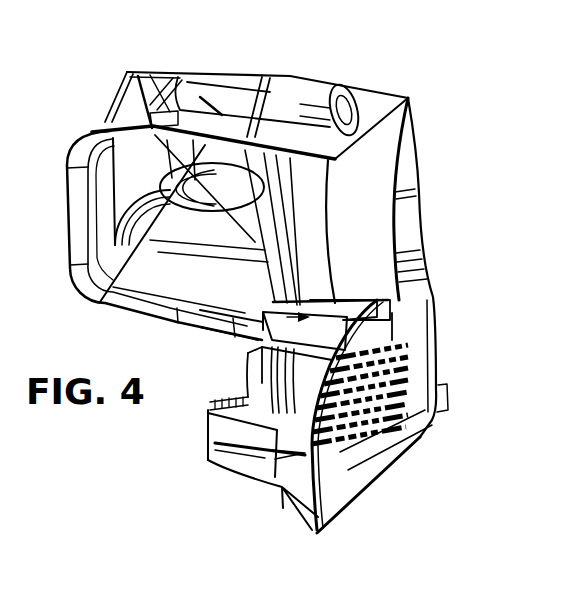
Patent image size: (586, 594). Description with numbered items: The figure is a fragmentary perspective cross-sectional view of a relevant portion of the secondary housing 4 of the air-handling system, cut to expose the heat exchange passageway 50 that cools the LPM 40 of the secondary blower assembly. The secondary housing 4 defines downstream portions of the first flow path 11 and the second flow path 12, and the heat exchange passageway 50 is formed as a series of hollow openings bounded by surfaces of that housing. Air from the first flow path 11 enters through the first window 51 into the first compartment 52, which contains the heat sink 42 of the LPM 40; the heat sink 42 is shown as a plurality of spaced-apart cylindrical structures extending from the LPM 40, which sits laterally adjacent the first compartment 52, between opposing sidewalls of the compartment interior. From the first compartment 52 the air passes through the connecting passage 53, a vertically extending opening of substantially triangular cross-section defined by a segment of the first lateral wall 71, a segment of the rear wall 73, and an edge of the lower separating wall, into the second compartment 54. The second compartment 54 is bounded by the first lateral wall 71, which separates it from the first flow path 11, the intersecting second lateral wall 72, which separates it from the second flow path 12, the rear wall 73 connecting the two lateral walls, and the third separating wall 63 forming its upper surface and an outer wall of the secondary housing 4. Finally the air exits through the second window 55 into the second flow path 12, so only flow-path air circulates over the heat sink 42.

The secondary housing 4 is at (303, 275).
The first flow path 11 is at (226, 322).
The second flow path 12 is at (146, 272).
The LPM 40 is at (339, 409).
The heat sink 42 is at (406, 423).
The heat exchange passageway 50 is at (414, 326).
The first window 51 is at (381, 298).
The first compartment 52 is at (423, 359).
The connecting passage 53 is at (414, 287).
The second compartment 54 is at (418, 223).
The second window 55 is at (258, 242).
The third separating wall 63 is at (381, 100).
The first lateral wall 71 is at (368, 182).
The second lateral wall 72 is at (147, 121).
The rear wall 73 is at (418, 202).